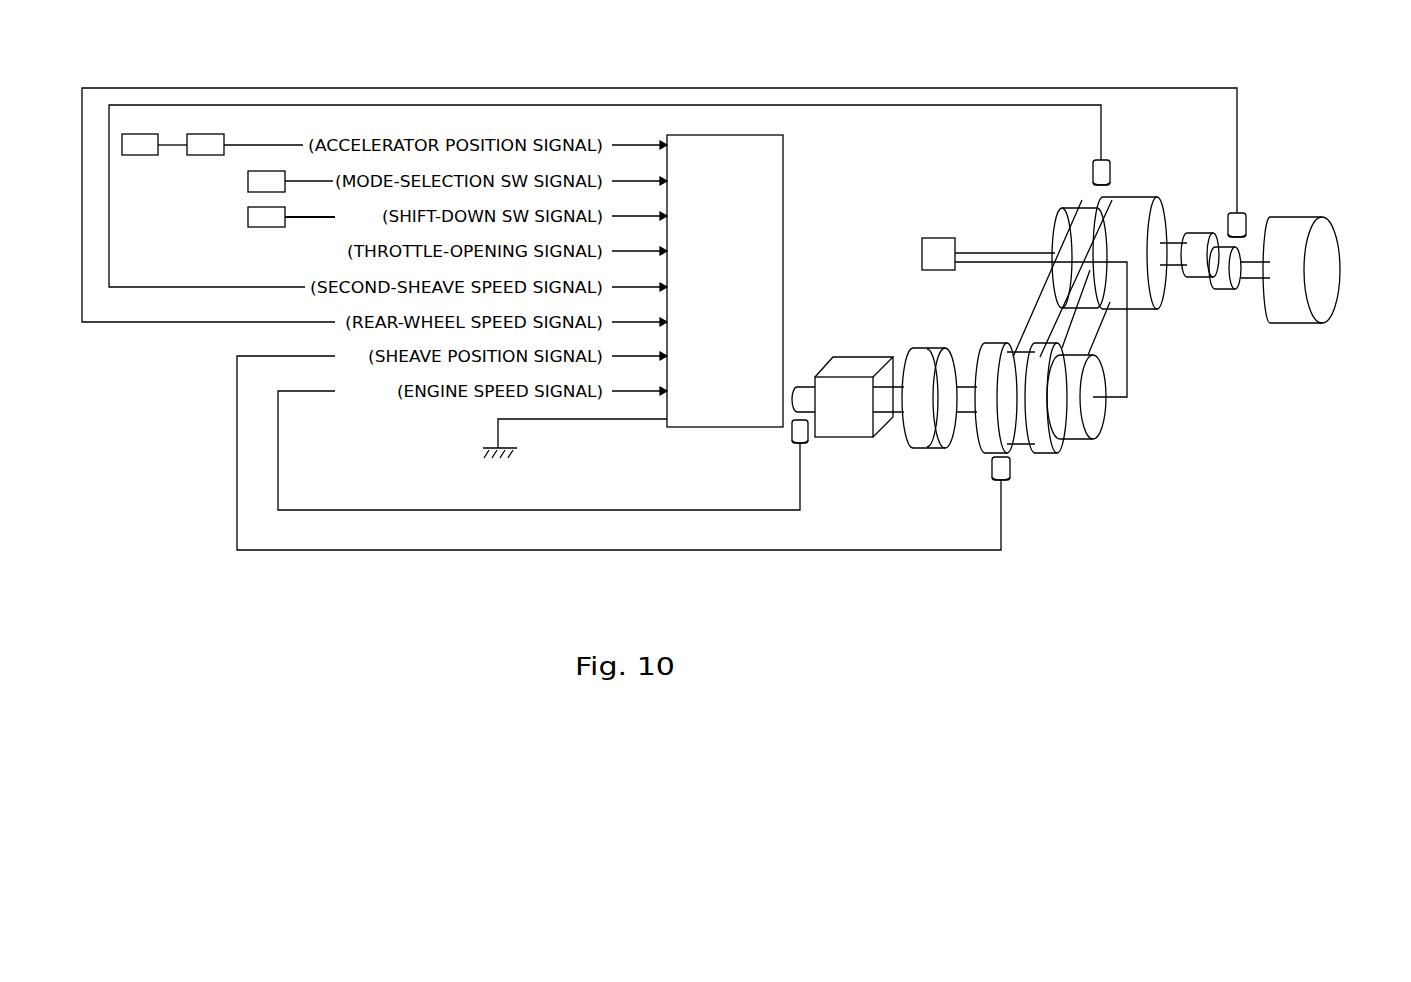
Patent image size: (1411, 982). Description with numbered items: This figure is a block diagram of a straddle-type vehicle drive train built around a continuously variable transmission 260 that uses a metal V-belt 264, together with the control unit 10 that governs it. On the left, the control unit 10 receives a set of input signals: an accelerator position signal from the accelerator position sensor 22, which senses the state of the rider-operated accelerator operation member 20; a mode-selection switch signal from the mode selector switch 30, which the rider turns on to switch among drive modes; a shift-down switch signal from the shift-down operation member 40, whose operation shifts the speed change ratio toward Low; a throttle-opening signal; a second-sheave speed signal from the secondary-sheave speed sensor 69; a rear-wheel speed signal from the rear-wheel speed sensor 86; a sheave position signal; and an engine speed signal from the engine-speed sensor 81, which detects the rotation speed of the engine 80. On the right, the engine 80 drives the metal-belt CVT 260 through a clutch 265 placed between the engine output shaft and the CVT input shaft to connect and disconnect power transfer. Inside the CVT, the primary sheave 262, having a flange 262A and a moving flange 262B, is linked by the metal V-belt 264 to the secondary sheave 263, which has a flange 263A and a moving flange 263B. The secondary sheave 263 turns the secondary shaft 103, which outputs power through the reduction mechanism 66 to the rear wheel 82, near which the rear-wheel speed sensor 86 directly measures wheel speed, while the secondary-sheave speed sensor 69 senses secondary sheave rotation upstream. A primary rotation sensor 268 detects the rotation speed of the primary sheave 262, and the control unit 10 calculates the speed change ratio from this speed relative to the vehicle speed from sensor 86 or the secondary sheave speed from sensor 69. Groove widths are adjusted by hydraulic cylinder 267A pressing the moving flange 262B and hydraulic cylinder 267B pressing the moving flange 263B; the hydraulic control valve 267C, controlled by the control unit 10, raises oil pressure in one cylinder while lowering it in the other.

The control unit 10 is at (783, 150).
The accelerator operation member 20 is at (140, 155).
The accelerator position sensor 22 is at (203, 155).
The mode selector switch 30 is at (270, 171).
The shift-down operation member 40 is at (270, 227).
The reduction mechanism 66 is at (1226, 290).
The secondary-sheave speed sensor 69 is at (1092, 160).
The engine 80 is at (843, 437).
The engine-speed sensor 81 is at (790, 437).
The rear wheel 82 is at (1337, 270).
The rear-wheel speed sensor 86 is at (1250, 213).
The secondary shaft 103 is at (1173, 258).
The continuously variable transmission 260 is at (1006, 323).
The primary sheave 262 is at (1032, 457).
The fixed sheave half of primary sheave 262A is at (983, 448).
The moving flange 262B is at (1070, 465).
The secondary sheave 263 is at (1120, 216).
The fixed sheave half of secondary sheave 263A is at (1160, 202).
The moving flange 263B is at (1085, 208).
The metal V-belt 264 is at (1110, 342).
The clutch 265 is at (917, 448).
The hydraulic cylinder 267A is at (1105, 420).
The hydraulic cylinder 267B is at (1052, 235).
The hydraulic control valve 267C is at (922, 262).
The primary rotation sensor 268 is at (1012, 482).